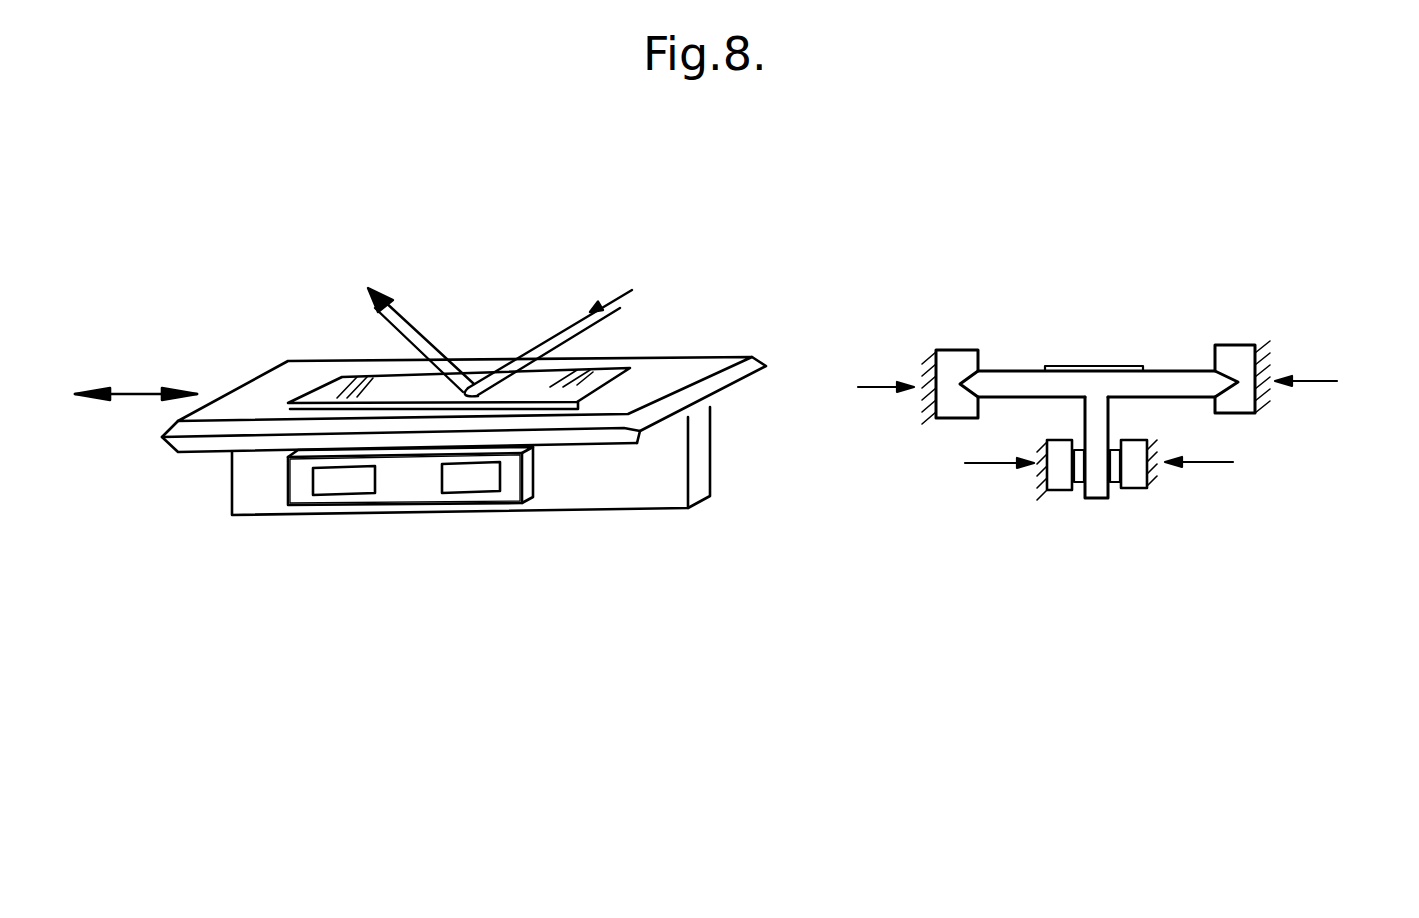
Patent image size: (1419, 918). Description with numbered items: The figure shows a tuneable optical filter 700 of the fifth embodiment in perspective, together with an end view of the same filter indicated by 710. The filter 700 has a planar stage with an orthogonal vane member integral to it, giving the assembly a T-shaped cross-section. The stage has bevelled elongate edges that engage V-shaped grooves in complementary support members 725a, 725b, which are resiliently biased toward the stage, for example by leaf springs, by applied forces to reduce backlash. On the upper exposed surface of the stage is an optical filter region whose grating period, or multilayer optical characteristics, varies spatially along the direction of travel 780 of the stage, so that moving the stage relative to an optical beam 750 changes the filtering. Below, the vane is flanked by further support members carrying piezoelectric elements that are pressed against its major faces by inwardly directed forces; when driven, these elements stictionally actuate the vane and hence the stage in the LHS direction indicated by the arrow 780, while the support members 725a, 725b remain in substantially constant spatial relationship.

The tuneable optical filter 700 is at (640, 215).
The end view of the filter 710 is at (1188, 212).
The support member 725a is at (950, 360).
The support member 725b is at (1235, 352).
The light beam 750 is at (547, 335).
The direction of travel 780 is at (135, 392).